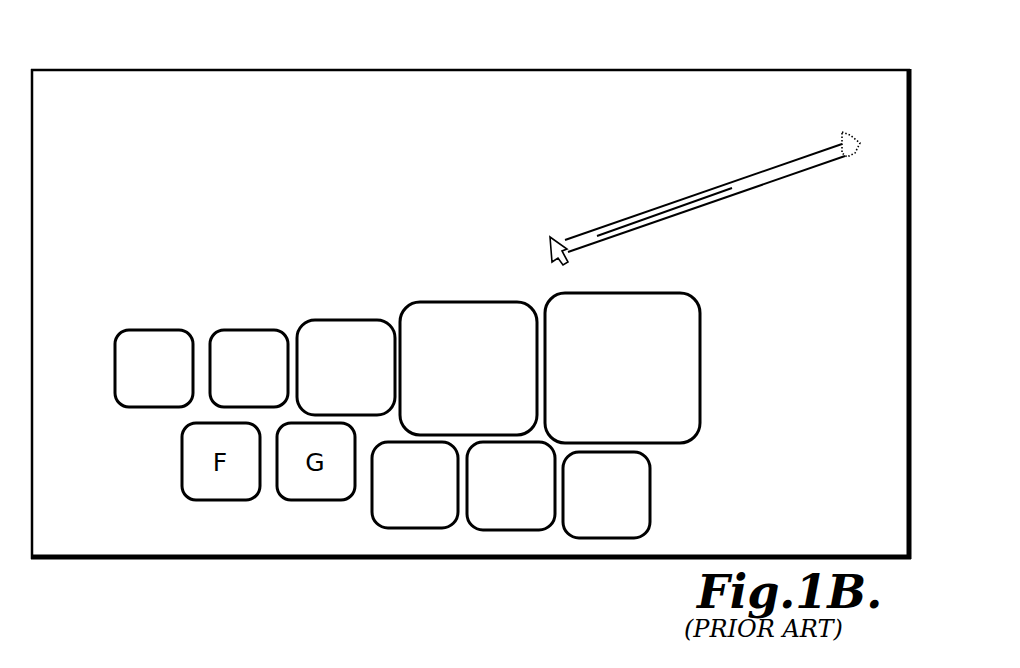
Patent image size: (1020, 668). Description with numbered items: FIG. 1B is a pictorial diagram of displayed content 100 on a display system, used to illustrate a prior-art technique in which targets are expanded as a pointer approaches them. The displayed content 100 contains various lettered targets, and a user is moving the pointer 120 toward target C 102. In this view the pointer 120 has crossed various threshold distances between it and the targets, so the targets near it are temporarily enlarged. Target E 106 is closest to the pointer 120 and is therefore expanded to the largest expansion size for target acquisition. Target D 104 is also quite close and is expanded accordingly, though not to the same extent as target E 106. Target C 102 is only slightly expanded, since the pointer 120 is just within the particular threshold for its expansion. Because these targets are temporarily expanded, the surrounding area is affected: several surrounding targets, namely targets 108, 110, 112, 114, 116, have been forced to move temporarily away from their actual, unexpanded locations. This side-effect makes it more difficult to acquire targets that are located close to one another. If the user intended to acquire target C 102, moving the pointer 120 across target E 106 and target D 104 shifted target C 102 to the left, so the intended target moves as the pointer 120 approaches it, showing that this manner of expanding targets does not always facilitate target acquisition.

The displayed content 100 is at (686, 69).
The target C 102 is at (337, 320).
The target D 104 is at (444, 302).
The target E 106 is at (676, 293).
The surrounding target 108 is at (142, 330).
The surrounding target 110 is at (247, 330).
The surrounding target 112 is at (418, 528).
The surrounding target 114 is at (508, 530).
The surrounding target 116 is at (612, 538).
The pointer 120 is at (548, 235).